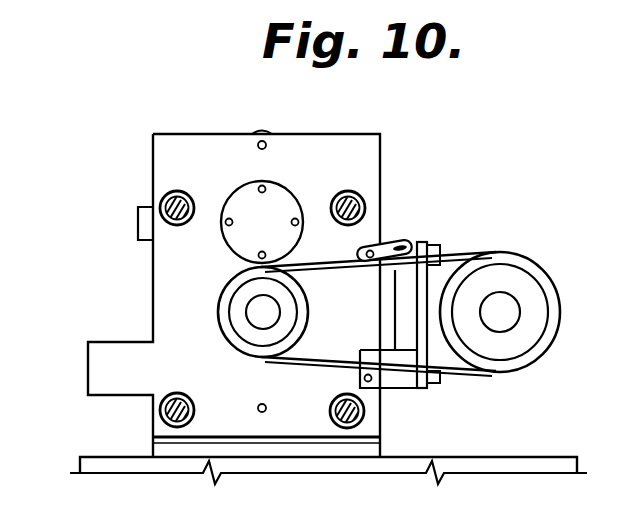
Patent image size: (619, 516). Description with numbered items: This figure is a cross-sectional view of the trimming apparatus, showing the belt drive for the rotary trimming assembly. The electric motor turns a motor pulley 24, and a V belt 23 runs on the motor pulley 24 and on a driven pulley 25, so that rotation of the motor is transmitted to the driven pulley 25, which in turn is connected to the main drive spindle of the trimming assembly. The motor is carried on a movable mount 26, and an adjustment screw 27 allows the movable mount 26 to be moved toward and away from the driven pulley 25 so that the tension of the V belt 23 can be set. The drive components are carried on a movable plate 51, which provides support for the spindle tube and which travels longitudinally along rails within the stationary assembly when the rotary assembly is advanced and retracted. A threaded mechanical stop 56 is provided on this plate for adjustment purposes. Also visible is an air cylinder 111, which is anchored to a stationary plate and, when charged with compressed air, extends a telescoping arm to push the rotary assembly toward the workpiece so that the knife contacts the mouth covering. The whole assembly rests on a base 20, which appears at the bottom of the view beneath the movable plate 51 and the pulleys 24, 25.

The base support 20 is at (118, 456).
The V belt 23 is at (327, 362).
The motor pulley 24 is at (523, 367).
The driven pulley 25 is at (233, 335).
The movable mount 26 is at (422, 243).
The adjustment screw 27 is at (404, 243).
The movable plate 51 is at (378, 169).
The threaded mechanical stop 56 is at (258, 404).
The air cylinder 111 is at (292, 195).